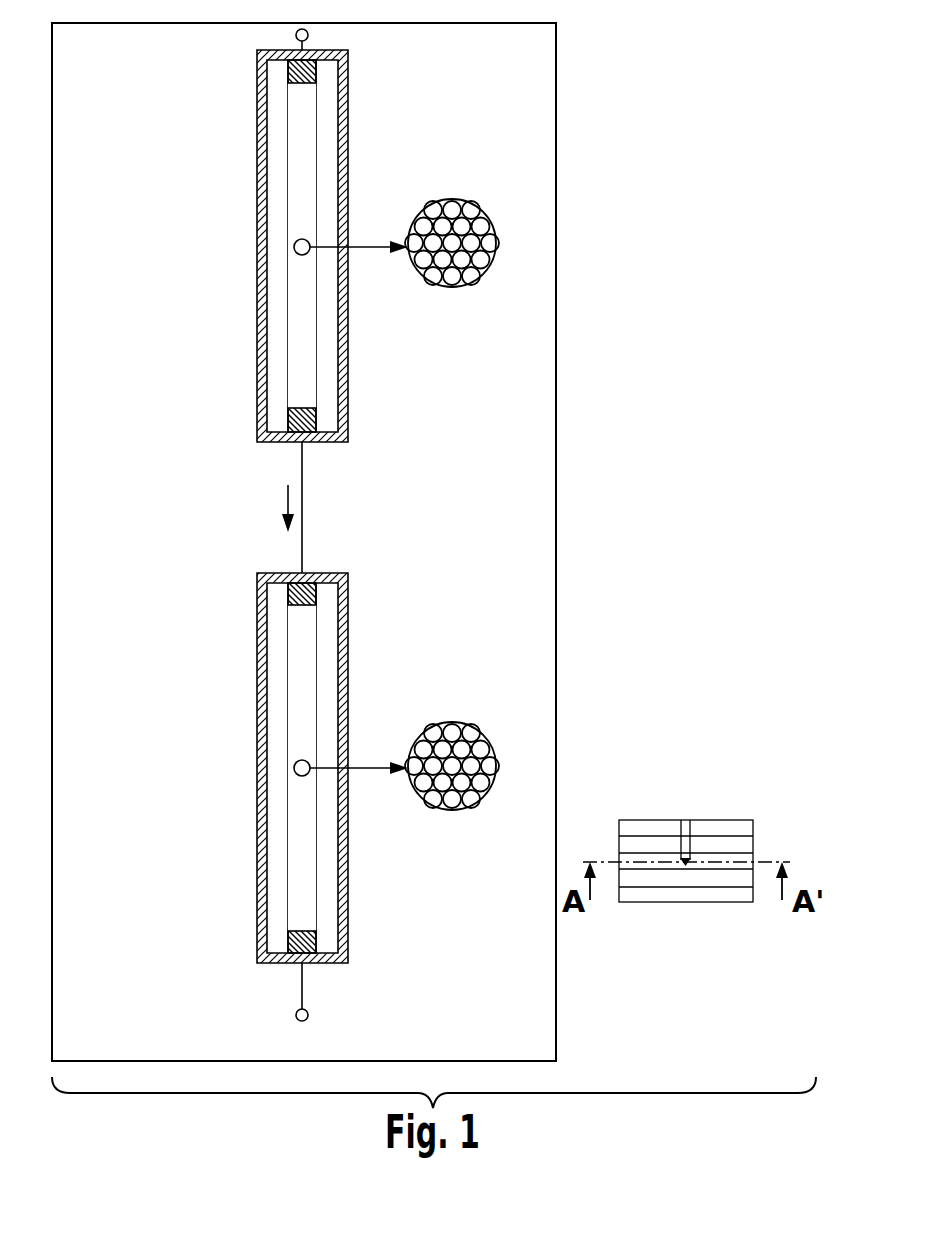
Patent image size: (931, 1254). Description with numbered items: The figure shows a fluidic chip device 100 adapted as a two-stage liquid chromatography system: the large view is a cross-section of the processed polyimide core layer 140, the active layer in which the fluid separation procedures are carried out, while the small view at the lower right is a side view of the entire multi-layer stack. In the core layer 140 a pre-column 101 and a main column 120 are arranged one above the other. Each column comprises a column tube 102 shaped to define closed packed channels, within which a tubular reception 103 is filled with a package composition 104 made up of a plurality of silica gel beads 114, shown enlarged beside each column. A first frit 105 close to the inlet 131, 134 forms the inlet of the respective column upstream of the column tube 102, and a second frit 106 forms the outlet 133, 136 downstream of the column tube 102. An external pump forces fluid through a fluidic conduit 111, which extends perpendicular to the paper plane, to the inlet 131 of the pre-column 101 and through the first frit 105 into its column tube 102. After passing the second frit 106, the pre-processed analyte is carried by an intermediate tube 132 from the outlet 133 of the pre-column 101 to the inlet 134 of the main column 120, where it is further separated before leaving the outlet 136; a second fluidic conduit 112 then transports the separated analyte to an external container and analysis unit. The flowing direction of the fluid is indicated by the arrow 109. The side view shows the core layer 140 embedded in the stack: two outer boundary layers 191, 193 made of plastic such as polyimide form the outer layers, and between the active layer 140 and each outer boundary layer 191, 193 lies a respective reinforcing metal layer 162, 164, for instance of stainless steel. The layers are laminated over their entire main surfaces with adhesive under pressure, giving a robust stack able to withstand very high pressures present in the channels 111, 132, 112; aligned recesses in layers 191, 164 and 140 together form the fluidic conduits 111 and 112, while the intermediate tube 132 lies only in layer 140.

The fluidic chip device 100 is at (583, 78).
The pre-column 101 is at (392, 97).
The column tube 102 is at (279, 290).
The tubular reception 103 is at (290, 153).
The package composition 104 is at (294, 250).
The first frit 105 is at (292, 70).
The second frit 106 is at (292, 423).
The flowing direction 109 is at (285, 500).
The fluidic conduit 111 is at (295, 36).
The second fluidic conduit 112 is at (309, 1014).
The silica gel beads 114 is at (440, 283).
The main column 120 is at (390, 622).
The inlet of the pre-column 131 is at (309, 38).
The intermediate tube 132 is at (303, 518).
The outlet of the pre-column 133 is at (311, 443).
The inlet of the main column 134 is at (310, 575).
The outlet of the main column 136 is at (290, 963).
The polyimide core layer 140 is at (543, 172).
The reinforcing metal layer 162 is at (642, 877).
The reinforcing metal layer 164 is at (645, 838).
The outer boundary layer 191 is at (632, 828).
The outer boundary layer 193 is at (727, 894).